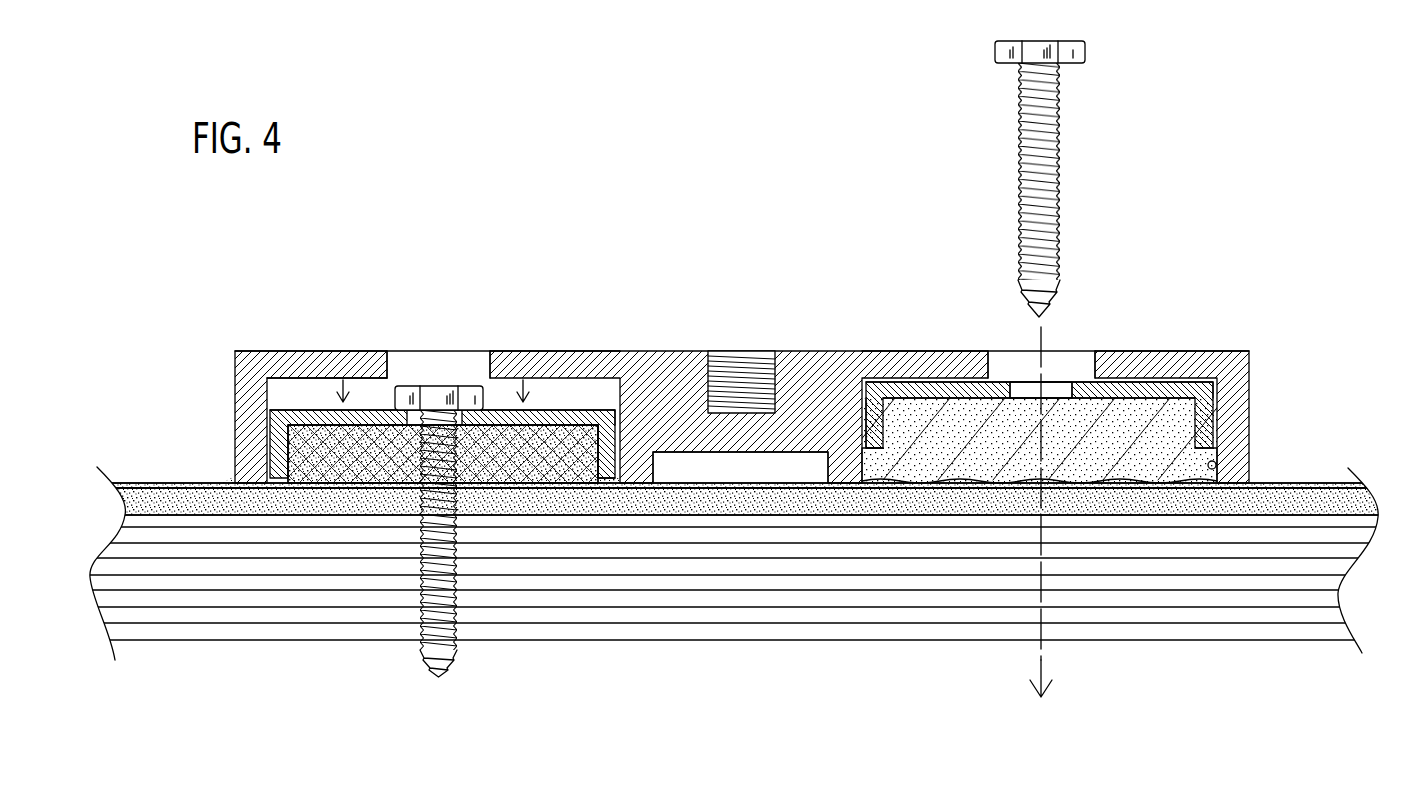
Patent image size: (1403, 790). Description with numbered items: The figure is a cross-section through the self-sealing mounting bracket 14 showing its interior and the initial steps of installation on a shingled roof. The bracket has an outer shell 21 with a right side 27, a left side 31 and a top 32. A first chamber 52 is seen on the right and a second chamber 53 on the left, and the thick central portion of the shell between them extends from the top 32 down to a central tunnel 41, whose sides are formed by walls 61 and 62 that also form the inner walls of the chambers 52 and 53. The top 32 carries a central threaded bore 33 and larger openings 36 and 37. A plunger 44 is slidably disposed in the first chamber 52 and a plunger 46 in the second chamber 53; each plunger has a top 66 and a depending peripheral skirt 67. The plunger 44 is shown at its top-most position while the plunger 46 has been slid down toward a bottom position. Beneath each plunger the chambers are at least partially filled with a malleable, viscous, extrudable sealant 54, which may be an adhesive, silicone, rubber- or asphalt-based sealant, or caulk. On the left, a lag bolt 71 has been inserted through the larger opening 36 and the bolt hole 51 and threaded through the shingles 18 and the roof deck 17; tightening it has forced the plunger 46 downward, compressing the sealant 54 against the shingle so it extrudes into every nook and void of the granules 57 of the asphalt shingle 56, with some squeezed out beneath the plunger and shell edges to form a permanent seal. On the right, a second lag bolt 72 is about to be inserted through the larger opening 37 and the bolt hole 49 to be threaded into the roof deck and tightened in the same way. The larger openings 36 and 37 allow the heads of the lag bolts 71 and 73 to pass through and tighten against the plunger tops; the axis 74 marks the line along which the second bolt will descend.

The self-sealing mounting bracket 14 is at (322, 326).
The roof deck 17 is at (855, 641).
The shingles 18 is at (740, 558).
The outer shell 21 is at (1168, 302).
The right side 27 is at (1249, 366).
The left side 31 is at (233, 380).
The top 32 is at (680, 351).
The central threaded bore 33 is at (737, 385).
The larger opening 36 is at (418, 363).
The larger opening 37 is at (1055, 368).
The central tunnel 41 is at (741, 470).
The plunger 44 is at (921, 390).
The plunger 46 is at (357, 409).
The bolt hole 49 is at (1057, 392).
The bolt hole 51 is at (465, 414).
The first chamber 52 is at (1216, 463).
The second chamber 53 is at (270, 390).
The sealant 54 is at (515, 465).
The asphalt shingle 56 is at (188, 500).
The granules 57 is at (203, 485).
The wall 61 is at (828, 465).
The wall 62 is at (656, 465).
The top 66 is at (611, 408).
The depending peripheral skirt 67 is at (611, 447).
The lag bolt 71 is at (448, 524).
The second lag bolt 72 is at (1088, 147).
The lag bolt 73 is at (542, 373).
The screw axis 74 is at (1037, 342).